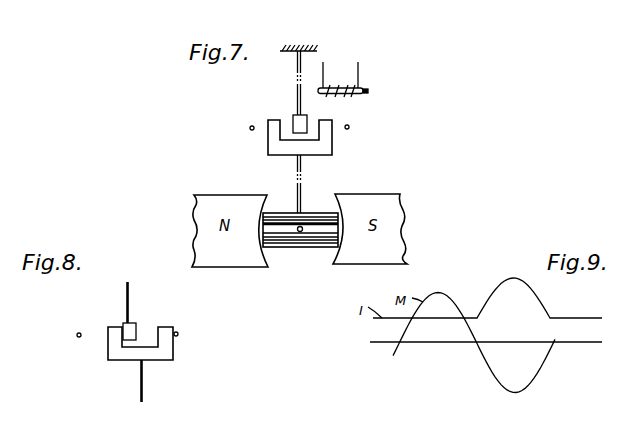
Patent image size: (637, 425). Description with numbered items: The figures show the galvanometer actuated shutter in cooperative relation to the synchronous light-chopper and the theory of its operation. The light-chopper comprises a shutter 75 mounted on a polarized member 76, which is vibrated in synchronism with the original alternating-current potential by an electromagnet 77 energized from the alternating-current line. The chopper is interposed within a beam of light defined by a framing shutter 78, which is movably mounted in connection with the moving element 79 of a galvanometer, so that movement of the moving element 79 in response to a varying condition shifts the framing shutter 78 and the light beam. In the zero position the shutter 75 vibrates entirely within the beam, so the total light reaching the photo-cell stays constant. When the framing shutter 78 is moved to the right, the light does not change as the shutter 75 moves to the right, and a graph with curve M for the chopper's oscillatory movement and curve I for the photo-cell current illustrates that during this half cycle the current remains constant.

In FIG. 7, the shutter 75 is at (293, 118).
In FIG. 8, the shutter 75 is at (136, 332).
In FIG. 7, the polarized member 76 is at (296, 85).
In FIG. 8, the polarized member 76 is at (130, 290).
In FIG. 7, the electromagnet 77 is at (368, 92).
In FIG. 7, the framing shutter 78 is at (268, 152).
In FIG. 7, the moving element of galvanometer 79 is at (313, 213).